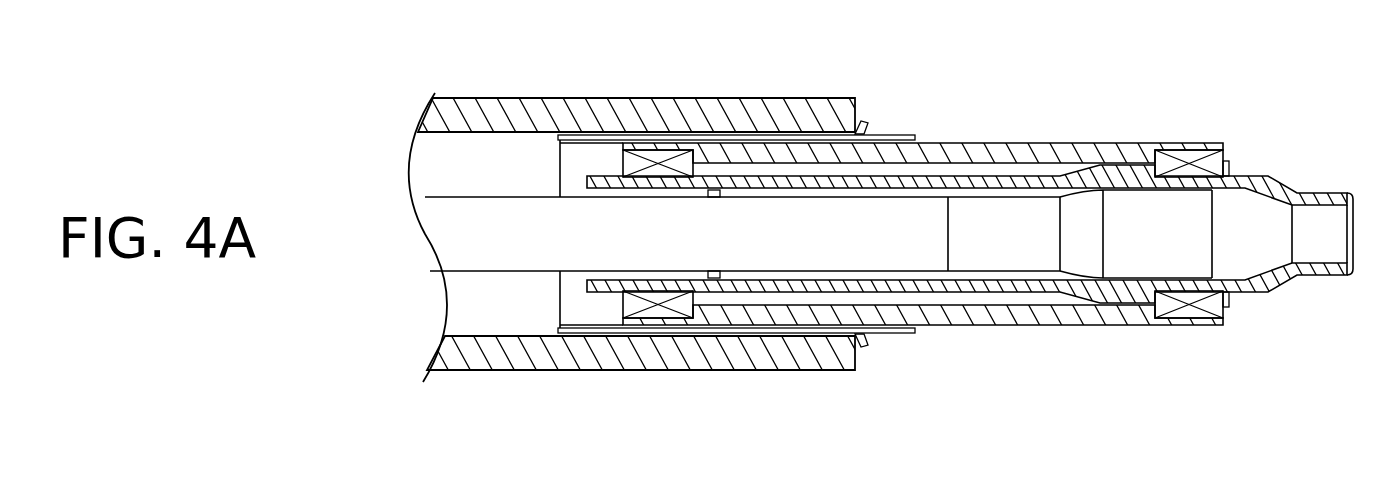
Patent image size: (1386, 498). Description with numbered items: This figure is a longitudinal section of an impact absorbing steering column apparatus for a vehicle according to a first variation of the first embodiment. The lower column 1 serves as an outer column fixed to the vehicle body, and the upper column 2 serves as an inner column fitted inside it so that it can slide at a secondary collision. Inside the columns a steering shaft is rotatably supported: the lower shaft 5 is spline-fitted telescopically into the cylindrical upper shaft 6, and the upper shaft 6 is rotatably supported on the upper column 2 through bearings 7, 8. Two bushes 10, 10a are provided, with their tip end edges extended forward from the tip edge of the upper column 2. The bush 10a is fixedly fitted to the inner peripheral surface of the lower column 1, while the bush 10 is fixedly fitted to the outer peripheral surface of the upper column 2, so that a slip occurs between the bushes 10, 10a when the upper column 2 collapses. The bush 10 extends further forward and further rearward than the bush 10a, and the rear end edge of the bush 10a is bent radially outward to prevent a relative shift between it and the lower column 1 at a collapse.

The lower column 1 is at (612, 97).
The upper column 2 is at (1048, 143).
The lower shaft 5 is at (535, 273).
The upper shaft 6 is at (1278, 288).
The bearing 7 is at (655, 312).
The bearing 8 is at (1185, 312).
The bush 10 is at (818, 134).
The bush 10a is at (720, 134).